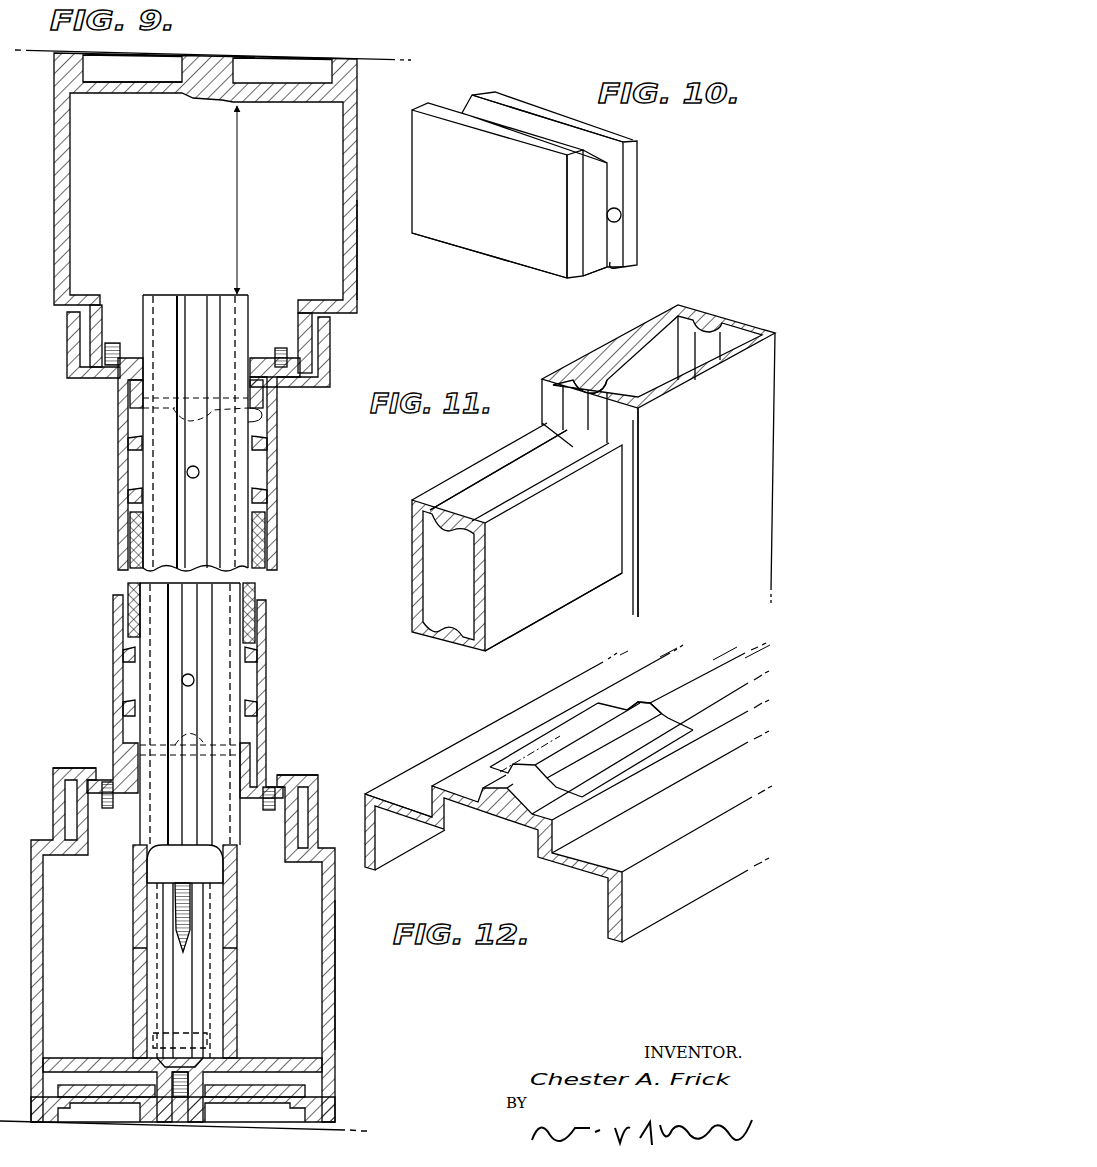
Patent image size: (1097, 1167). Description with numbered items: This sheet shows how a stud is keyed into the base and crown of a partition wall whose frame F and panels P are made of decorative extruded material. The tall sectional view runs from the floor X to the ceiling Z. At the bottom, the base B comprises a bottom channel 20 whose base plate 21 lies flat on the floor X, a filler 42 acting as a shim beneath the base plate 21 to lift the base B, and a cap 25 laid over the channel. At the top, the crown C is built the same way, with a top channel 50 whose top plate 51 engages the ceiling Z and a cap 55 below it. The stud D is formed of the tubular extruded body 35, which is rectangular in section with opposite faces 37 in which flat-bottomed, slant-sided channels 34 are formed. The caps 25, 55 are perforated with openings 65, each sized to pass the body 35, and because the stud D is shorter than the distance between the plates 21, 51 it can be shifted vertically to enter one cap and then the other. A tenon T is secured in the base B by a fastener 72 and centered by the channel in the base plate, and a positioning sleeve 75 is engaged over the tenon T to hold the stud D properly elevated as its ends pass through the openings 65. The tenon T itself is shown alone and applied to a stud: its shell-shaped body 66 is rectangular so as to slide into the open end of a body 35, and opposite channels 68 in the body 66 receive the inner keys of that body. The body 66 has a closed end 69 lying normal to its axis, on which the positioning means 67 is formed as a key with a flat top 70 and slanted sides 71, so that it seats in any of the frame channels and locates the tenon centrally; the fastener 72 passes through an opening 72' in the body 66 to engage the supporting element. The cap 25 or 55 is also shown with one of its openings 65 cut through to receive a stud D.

In FIG. 9, the bottom channel 20 is at (340, 1000).
In FIG. 9, the base plate 21 is at (88, 1058).
In FIG. 9, the cap 25 is at (305, 769).
In FIG. 12, the cap 25 is at (398, 805).
In FIG. 9, the channels 34 is at (201, 302).
In FIG. 9, the extruded body 35 is at (163, 302).
In FIG. 9, the faces 37 is at (249, 302).
In FIG. 9, the filler 42 is at (185, 1118).
In FIG. 9, the top channel 50 is at (358, 172).
In FIG. 9, the top plate 51 is at (120, 93).
In FIG. 12, the cap 55 is at (500, 714).
In FIG. 9, the openings 65 is at (262, 416).
In FIG. 12, the openings 65 is at (652, 723).
In FIG. 10, the body 66 is at (489, 255).
In FIG. 11, the body 66 is at (553, 612).
In FIG. 10, the positioning means 67 is at (629, 190).
In FIG. 11, the positioning means 67 is at (602, 432).
In FIG. 10, the channels 68 is at (562, 130).
In FIG. 11, the channels 68 is at (513, 475).
In FIG. 10, the end 69 is at (572, 238).
In FIG. 11, the end 69 is at (626, 442).
In FIG. 10, the flat top 70 is at (618, 250).
In FIG. 10, the slanted sides 71 is at (593, 265).
In FIG. 9, the fastener 72 is at (218, 1034).
In FIG. 10, the opening 72' is at (647, 215).
In FIG. 9, the positioning sleeve 75 is at (238, 971).
In FIG. 9, the base B is at (342, 1043).
In FIG. 9, the crown C is at (359, 258).
In FIG. 9, the stud D is at (260, 300).
In FIG. 11, the stud D is at (738, 322).
In FIG. 9, the frame F is at (360, 305).
In FIG. 9, the housing G is at (280, 478).
In FIG. 9, the panels P is at (128, 571).
In FIG. 10, the tenon T is at (525, 100).
In FIG. 11, the tenon T is at (453, 476).
In FIG. 9, the floor X is at (340, 1128).
In FIG. 9, the ceiling Z is at (377, 61).